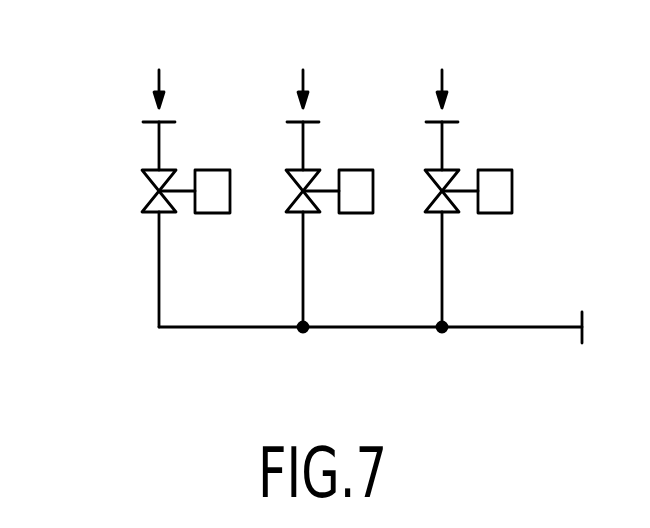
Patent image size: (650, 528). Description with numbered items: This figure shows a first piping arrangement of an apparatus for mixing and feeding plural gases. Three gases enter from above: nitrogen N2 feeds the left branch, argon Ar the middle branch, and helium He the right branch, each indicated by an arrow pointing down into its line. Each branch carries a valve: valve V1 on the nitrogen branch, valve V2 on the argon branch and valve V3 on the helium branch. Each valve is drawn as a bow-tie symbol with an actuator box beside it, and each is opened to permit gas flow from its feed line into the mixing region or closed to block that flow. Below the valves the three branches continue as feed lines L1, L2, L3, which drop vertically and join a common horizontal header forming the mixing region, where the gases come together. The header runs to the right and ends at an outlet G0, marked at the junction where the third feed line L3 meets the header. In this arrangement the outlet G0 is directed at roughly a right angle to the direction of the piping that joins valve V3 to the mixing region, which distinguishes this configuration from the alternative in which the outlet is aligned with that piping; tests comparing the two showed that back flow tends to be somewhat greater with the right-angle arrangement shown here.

The nitrogen gas supply N2 is at (164, 68).
The argon gas supply Ar is at (301, 68).
The helium gas supply He is at (442, 68).
The valve V1 is at (142, 176).
The valve V2 is at (290, 173).
The valve V3 is at (436, 173).
The feed line L1 is at (158, 283).
The feed line L2 is at (302, 278).
The feed line L3 is at (442, 263).
The outlet G0 is at (440, 330).